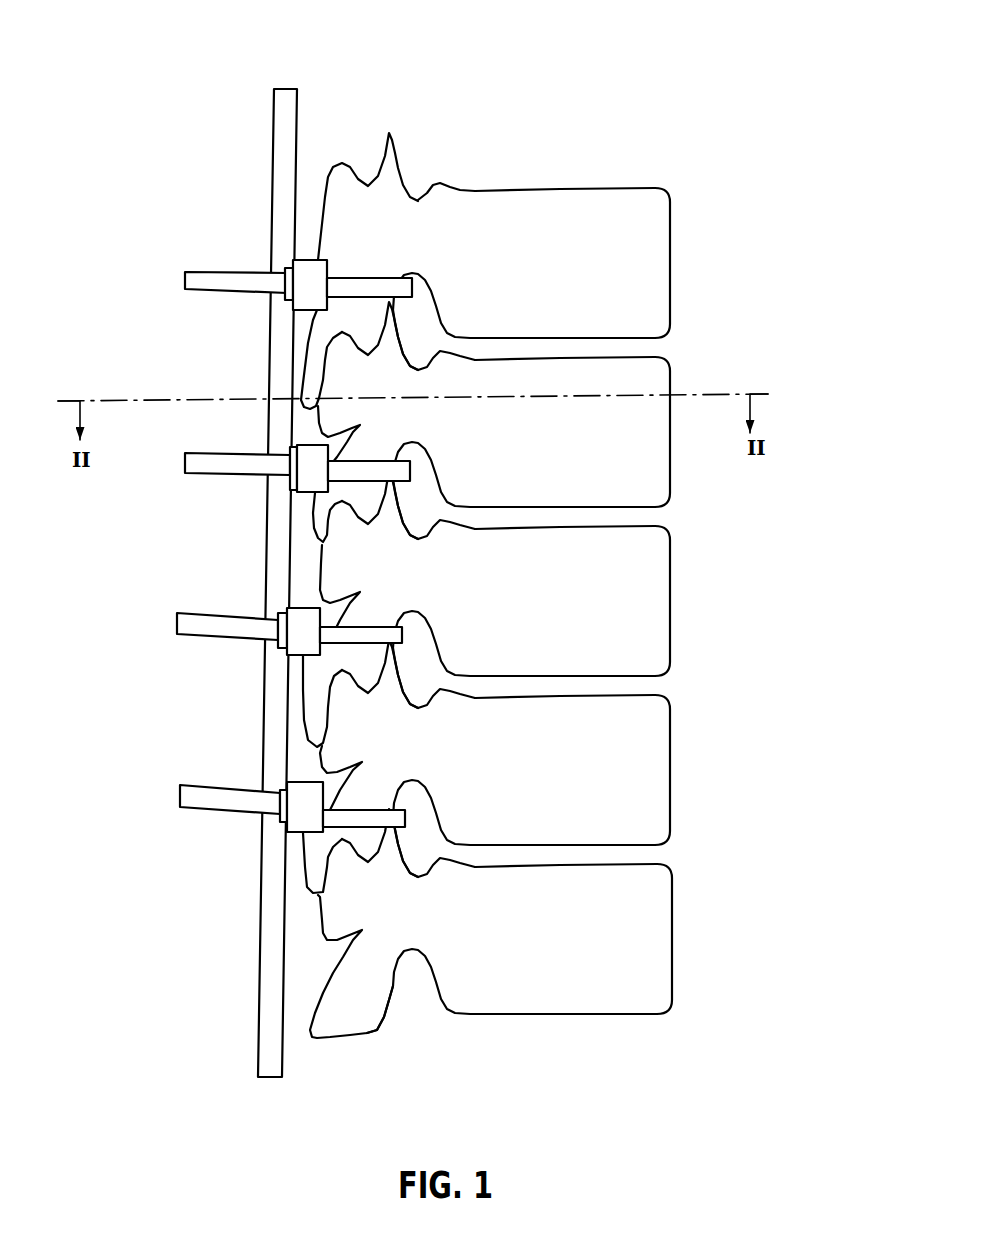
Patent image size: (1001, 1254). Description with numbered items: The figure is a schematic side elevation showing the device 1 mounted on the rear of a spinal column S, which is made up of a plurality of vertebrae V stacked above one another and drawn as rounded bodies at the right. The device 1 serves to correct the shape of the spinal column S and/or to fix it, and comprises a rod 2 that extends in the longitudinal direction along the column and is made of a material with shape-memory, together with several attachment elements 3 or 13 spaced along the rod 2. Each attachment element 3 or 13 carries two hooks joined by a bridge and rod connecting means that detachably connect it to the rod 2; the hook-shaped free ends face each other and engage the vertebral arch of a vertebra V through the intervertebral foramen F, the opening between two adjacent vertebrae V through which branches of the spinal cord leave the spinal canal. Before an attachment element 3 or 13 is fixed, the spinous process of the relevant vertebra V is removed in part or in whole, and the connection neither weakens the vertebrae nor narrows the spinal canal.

The device 1 is at (247, 559).
The rod 2 is at (282, 383).
The attachment element 3 is at (247, 546).
The attachment element 13 is at (242, 492).
The spinal column S is at (486, 519).
The vertebra V is at (564, 289).
The intervertebral foramen F is at (423, 317).